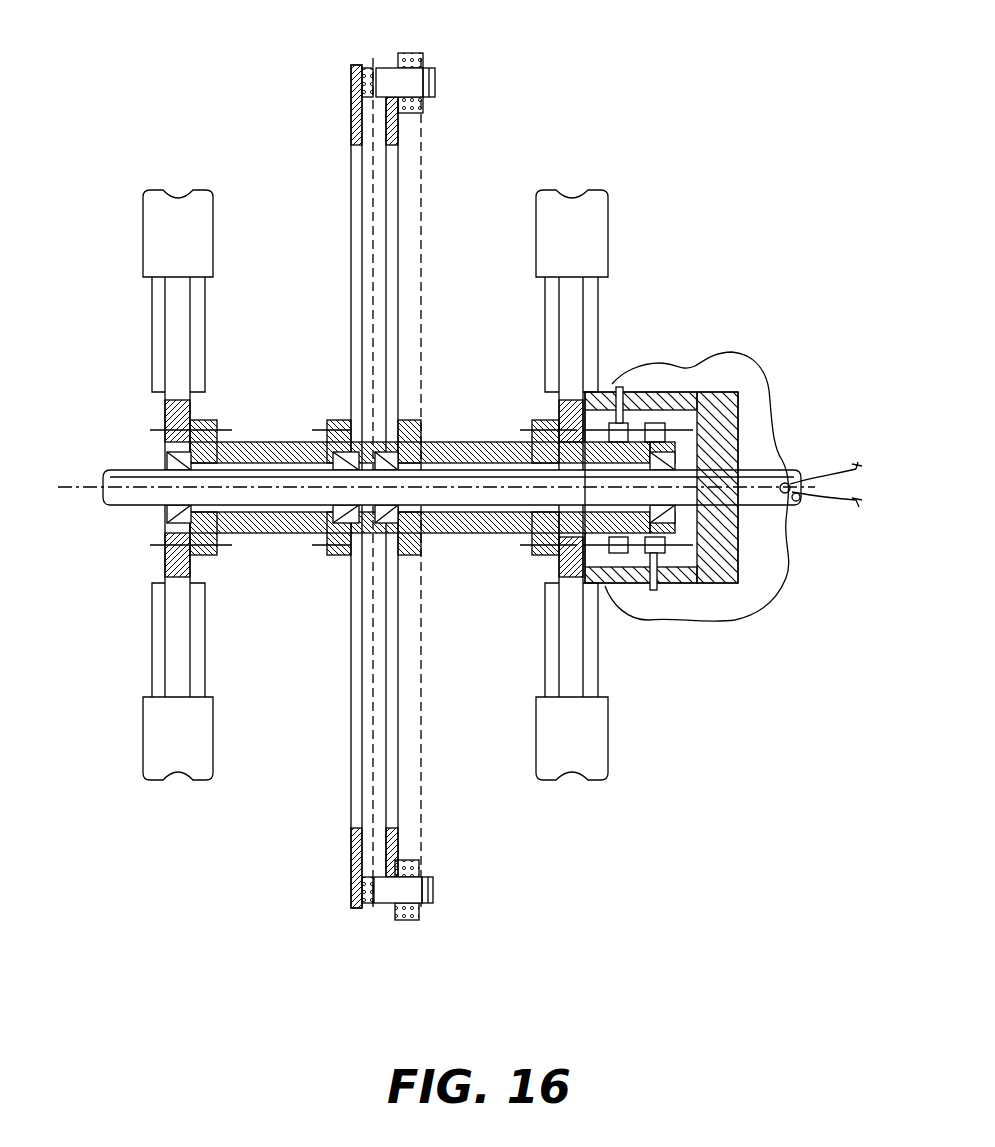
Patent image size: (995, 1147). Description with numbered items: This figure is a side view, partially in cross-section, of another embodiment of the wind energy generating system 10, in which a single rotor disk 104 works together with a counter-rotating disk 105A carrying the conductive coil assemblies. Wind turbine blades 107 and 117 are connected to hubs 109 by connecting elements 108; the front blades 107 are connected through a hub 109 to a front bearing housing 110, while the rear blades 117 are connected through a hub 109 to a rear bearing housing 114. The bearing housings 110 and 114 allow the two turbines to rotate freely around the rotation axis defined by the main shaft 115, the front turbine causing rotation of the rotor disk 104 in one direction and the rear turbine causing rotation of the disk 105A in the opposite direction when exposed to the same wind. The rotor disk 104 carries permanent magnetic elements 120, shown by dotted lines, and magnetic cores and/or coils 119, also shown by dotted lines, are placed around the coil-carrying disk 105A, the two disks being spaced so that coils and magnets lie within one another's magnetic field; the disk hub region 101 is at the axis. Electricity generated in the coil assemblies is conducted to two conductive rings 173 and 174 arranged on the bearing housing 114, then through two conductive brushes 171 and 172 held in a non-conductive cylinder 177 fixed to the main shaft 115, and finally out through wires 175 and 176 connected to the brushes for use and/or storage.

The brake assembly 10 is at (574, 118).
The hub 101 is at (378, 68).
The rotor disk 104 is at (351, 148).
The disk 105A is at (398, 182).
The wind turbine blades 107 is at (181, 197).
The connecting elements 108 is at (153, 318).
The hub 109 is at (165, 362).
The front bearing housing 110 is at (265, 442).
The rear bearing housing 114 is at (438, 535).
The main shaft 115 is at (143, 470).
The wind turbine blades 117 is at (582, 196).
The magnetic cores and/or coils 119 is at (422, 663).
The permanent magnetic elements 120 is at (369, 810).
The conductive brush 171 is at (619, 387).
The conductive brush 172 is at (654, 590).
The conductive ring 173 is at (614, 553).
The conductive ring 174 is at (656, 423).
The wire 175 is at (732, 354).
The wire 176 is at (857, 502).
The non-conductive cylinder 177 is at (737, 578).